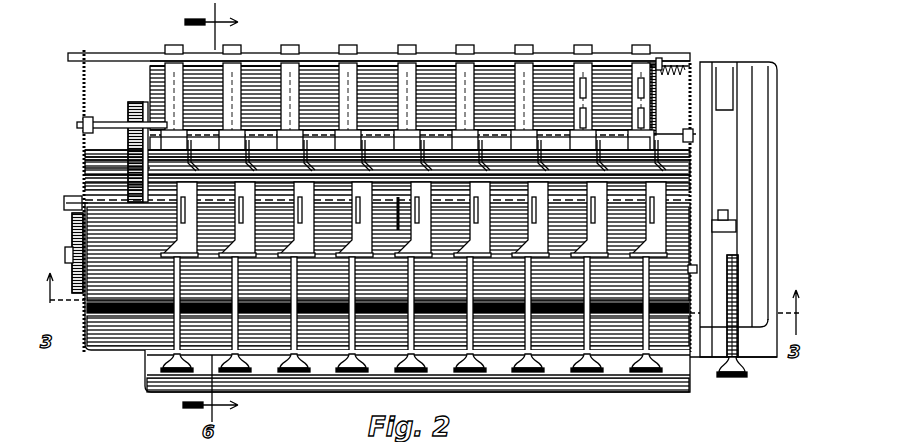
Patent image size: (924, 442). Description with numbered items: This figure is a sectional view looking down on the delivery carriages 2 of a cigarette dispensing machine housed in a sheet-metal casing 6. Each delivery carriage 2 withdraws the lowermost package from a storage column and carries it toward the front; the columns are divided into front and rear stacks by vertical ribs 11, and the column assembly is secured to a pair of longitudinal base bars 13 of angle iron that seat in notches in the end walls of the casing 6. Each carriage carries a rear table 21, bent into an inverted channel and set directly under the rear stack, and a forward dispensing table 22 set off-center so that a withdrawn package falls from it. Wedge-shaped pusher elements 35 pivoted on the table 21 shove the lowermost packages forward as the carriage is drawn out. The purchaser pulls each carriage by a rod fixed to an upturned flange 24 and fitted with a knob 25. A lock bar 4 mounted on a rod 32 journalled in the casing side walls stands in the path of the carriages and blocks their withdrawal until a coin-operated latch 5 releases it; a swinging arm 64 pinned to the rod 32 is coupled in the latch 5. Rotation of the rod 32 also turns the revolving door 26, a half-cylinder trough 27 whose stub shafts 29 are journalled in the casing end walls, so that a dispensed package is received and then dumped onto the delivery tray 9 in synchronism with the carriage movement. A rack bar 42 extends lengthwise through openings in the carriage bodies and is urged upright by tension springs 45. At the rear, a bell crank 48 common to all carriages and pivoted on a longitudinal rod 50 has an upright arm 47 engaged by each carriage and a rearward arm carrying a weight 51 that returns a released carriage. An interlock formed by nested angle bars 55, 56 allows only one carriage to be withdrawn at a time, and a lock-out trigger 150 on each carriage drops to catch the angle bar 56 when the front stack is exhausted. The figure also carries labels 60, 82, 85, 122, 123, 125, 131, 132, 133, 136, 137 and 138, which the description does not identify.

The delivery carriage 2 is at (224, 242).
The lock bar 4 is at (168, 200).
The coin operated latch 5 is at (748, 132).
The casing 6 is at (704, 156).
The delivery tray 9 is at (548, 385).
The vertical ribs 11 is at (505, 210).
The longitudinal base bars 13 is at (290, 206).
The rear table 21 is at (527, 90).
The forward table 22 is at (650, 243).
The upturned flanges 24 is at (294, 250).
The knobs 25 is at (480, 372).
The revolving door 26 is at (272, 310).
The trough 27 is at (328, 295).
The stub shafts 29 is at (697, 266).
The rod 32 is at (712, 215).
The pusher elements 35 is at (465, 56).
The rack bar 42 is at (118, 162).
The tension springs 45 is at (84, 158).
The upright arm 47 is at (322, 68).
The bell crank 48 is at (262, 53).
The longitudinal rod 50 is at (84, 122).
The weight 51 is at (72, 206).
The angle bar 55 is at (105, 172).
The angle bar 56 is at (88, 166).
The slotted plate 60 is at (560, 110).
The swinging arm 64 is at (728, 215).
The rack bar 82 is at (130, 116).
The rack guide 85 is at (143, 118).
The threaded rod 122 is at (736, 280).
The foot 123 is at (726, 378).
The adjusting nut 125 is at (736, 292).
The slider block 131 is at (515, 60).
The slider block 132 is at (378, 60).
The bracket 133 is at (737, 80).
The spring 136 is at (676, 64).
The stop 137 is at (660, 58).
The frame post 138 is at (86, 53).
The lock-out trigger 150 is at (335, 160).